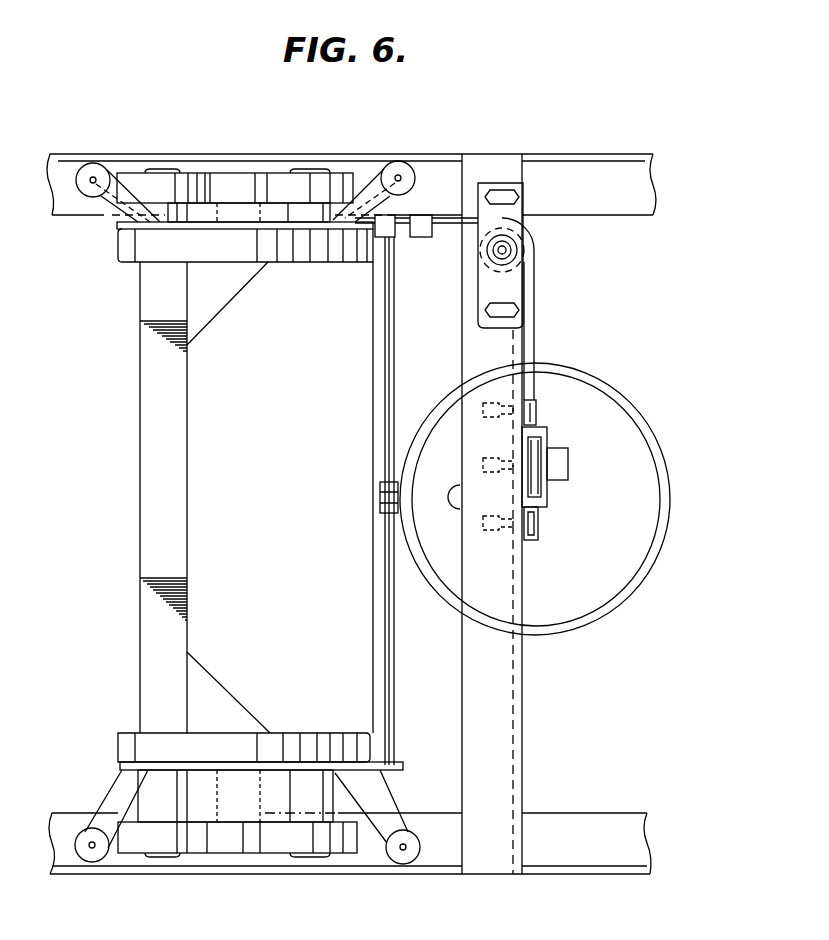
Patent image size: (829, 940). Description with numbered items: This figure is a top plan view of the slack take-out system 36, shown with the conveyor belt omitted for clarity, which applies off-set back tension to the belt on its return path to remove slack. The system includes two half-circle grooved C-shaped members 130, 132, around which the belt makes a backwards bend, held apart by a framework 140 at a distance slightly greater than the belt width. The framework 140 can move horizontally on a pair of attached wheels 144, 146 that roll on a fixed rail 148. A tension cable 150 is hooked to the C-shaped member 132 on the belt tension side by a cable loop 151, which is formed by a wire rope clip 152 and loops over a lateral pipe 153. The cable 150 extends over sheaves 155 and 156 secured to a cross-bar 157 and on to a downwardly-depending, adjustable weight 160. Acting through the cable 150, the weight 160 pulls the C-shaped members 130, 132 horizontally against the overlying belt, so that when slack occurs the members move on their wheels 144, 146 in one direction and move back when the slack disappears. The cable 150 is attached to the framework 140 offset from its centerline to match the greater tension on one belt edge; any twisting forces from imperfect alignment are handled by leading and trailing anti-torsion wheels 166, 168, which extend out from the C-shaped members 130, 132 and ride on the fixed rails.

The slack take-out system 36 is at (624, 313).
The half-circle shaped member 130 is at (275, 732).
The half-circle shaped member 132 is at (258, 264).
The framework 140 is at (178, 522).
The wheel 144 is at (165, 186).
The wheel 146 is at (333, 181).
The fixed rail 148 is at (66, 205).
The tension cable 150 is at (533, 330).
The cable loop 151 is at (395, 238).
The wire rope clip 152 is at (431, 214).
The lateral pipe 153 is at (384, 373).
The sheave 155 is at (540, 437).
The sheave 156 is at (519, 256).
The cross-bar 157 is at (514, 728).
The weight 160 is at (630, 588).
The anti-torsion wheel 166 is at (398, 176).
The anti-torsion wheel 168 is at (93, 176).